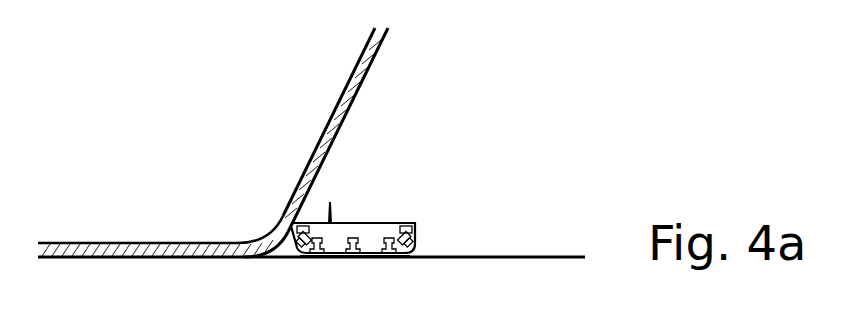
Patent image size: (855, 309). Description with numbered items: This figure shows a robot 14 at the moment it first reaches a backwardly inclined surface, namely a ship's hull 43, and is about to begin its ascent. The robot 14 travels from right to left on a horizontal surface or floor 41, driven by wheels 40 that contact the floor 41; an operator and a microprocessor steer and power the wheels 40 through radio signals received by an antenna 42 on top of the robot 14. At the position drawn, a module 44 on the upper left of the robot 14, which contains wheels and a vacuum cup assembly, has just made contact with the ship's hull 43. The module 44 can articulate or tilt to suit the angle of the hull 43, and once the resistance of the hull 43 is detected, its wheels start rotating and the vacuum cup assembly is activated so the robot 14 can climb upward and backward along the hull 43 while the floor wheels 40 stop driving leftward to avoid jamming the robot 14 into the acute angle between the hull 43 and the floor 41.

The robot 14 is at (384, 224).
The wheels 40 is at (393, 258).
The horizontal surface or floor 41 is at (513, 259).
The antenna 42 is at (333, 198).
The ship's hull 43 is at (340, 102).
The module 44 is at (280, 224).